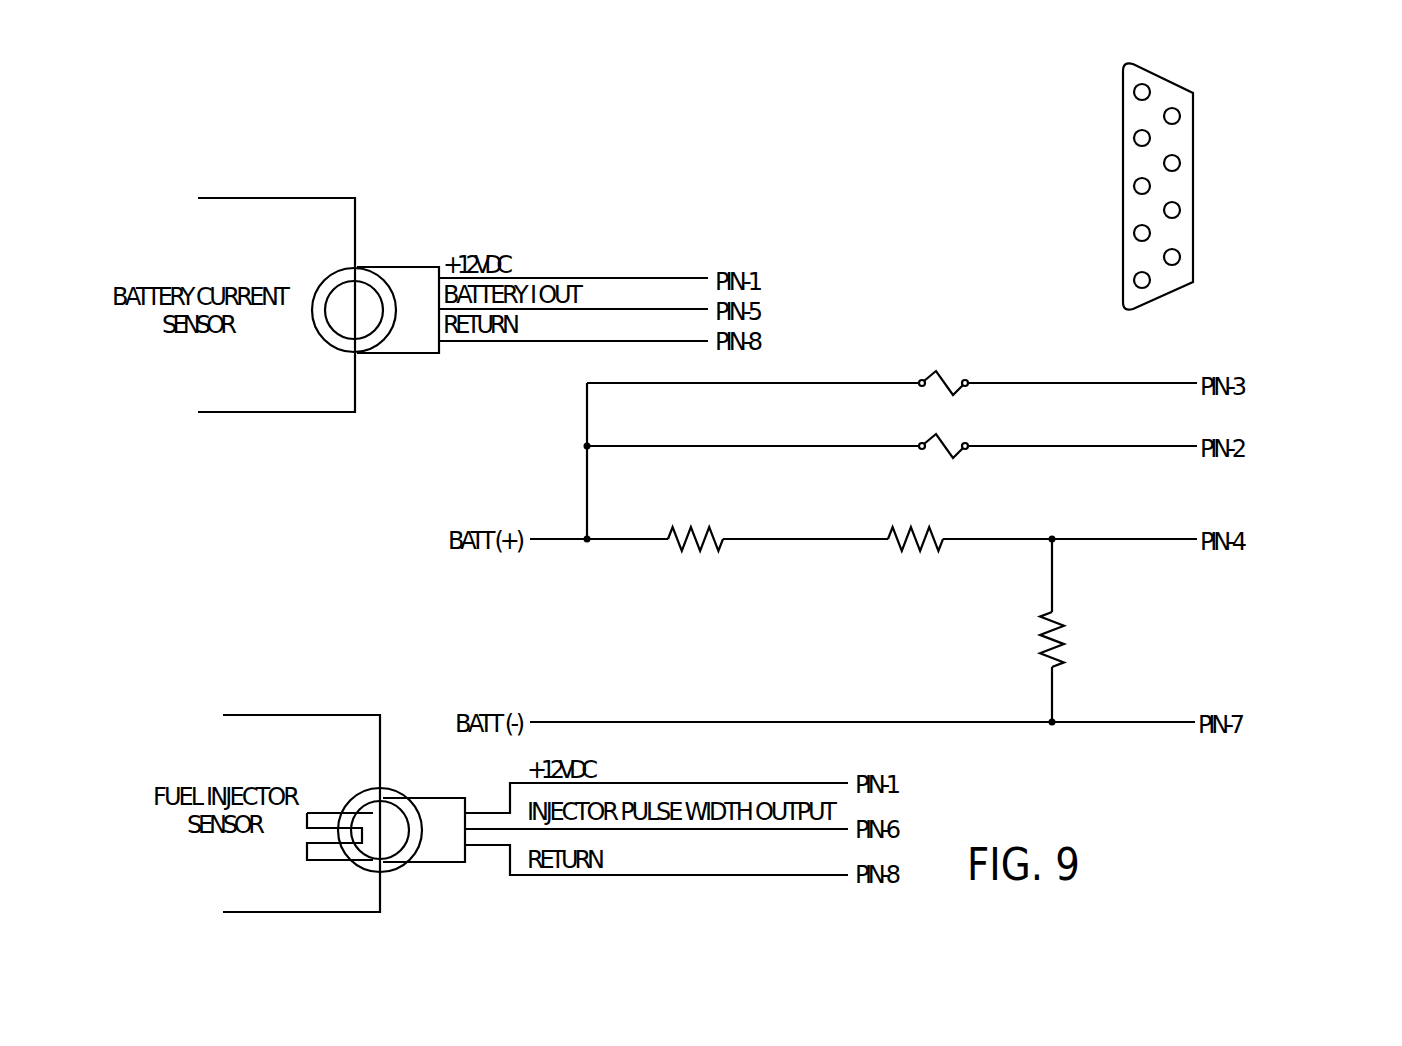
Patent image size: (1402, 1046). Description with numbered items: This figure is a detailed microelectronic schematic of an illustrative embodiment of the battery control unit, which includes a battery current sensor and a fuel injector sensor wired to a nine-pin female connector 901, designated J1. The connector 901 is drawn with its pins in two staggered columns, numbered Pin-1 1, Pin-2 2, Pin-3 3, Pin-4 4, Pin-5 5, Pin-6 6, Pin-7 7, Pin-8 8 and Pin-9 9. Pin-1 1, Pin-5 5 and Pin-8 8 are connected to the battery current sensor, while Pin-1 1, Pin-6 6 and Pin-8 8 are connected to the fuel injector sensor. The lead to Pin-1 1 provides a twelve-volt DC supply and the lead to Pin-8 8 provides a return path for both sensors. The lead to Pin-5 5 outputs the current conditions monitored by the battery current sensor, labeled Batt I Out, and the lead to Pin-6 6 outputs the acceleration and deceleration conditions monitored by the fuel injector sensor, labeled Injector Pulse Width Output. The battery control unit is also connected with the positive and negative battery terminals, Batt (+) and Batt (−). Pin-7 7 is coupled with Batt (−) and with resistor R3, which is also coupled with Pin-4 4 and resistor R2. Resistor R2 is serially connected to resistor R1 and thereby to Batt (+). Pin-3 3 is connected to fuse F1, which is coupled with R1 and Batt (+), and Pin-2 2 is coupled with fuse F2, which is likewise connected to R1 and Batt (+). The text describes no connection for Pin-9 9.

The connector 901 is at (1207, 190).
The Pin- 1 is at (1134, 280).
The Pin- 2 is at (1134, 233).
The Pin- 3 is at (1134, 186).
The Pin- 4 is at (1134, 138).
The Pin- 5 is at (1134, 92).
The Pin- 6 is at (1164, 257).
The Pin- 7 is at (1164, 210).
The Pin- 8 is at (1164, 163).
The Pin- 9 is at (1164, 116).
The resistor R1 is at (694, 541).
The resistor R2 is at (915, 541).
The resistor R3 is at (1095, 640).
The fuse F1 is at (973, 372).
The fuse F2 is at (973, 435).
The connector J1 is at (1162, 65).